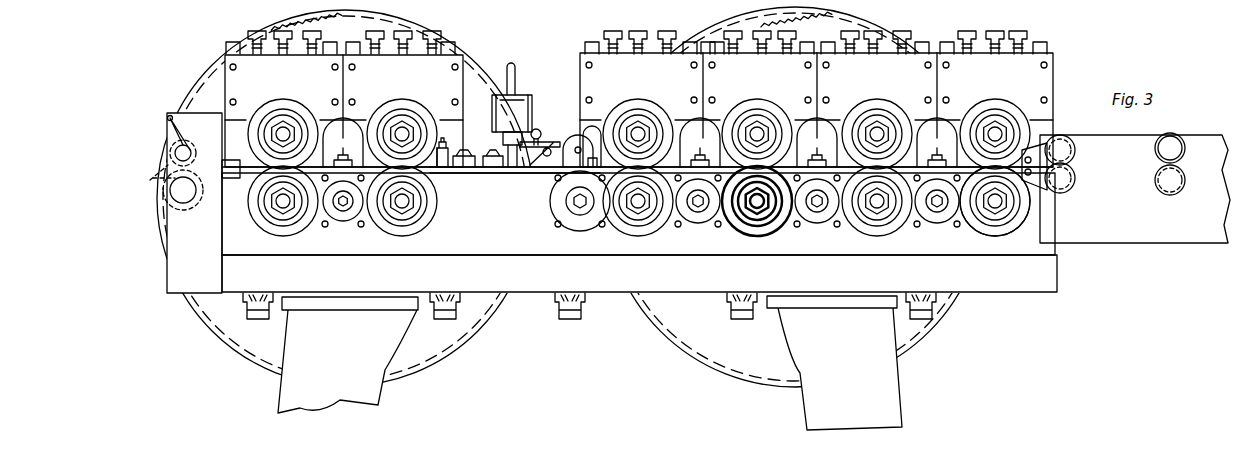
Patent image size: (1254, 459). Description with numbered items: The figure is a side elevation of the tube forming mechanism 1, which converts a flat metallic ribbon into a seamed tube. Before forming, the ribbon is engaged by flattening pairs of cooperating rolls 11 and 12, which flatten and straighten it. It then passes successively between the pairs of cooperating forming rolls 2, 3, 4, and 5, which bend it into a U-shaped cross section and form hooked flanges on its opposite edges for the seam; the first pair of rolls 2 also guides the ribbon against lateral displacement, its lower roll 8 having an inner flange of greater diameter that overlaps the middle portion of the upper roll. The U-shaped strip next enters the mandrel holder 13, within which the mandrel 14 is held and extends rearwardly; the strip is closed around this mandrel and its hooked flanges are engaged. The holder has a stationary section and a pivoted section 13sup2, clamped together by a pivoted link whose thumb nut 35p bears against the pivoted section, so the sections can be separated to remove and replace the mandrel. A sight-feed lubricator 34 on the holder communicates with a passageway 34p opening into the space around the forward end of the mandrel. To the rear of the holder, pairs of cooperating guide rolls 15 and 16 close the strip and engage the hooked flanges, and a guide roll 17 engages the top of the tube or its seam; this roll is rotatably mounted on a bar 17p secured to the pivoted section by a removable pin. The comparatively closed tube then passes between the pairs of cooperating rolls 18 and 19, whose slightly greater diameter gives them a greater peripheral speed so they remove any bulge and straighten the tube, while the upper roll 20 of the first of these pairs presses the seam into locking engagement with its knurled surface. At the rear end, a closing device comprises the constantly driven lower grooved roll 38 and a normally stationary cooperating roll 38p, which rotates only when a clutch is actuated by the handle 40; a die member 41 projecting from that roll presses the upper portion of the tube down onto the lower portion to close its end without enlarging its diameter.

The tube forming mechanism 1 is at (1085, 265).
The pair of cooperating forming rolls 2 is at (995, 238).
The pair of cooperating forming rolls 3 is at (877, 232).
The pair of cooperating forming rolls 4 is at (755, 232).
The pair of cooperating forming rolls 5 is at (638, 226).
The lower roll 8 is at (1000, 222).
The flattening pair of cooperating rolls 11 is at (1060, 135).
The flattening pair of cooperating rolls 12 is at (1182, 135).
The mandrel holder 13 is at (470, 174).
The pivoted section 13sup2 is at (587, 162).
The mandrel 14 is at (514, 168).
The pair of cooperating guide rolls 15 is at (493, 168).
The pair of cooperating guide rolls 16 is at (458, 168).
The guide roll 17 is at (448, 150).
The bar 17p is at (440, 176).
The pair of cooperating rolls 18 is at (402, 236).
The pair of cooperating rolls 19 is at (285, 236).
The upper roll 20 is at (406, 110).
The lubricator 34 is at (516, 114).
The passageway 34p is at (516, 160).
The thumb nut 35p is at (542, 143).
The lower grooved roll 38 is at (186, 210).
The rotatable roll 38p is at (188, 145).
The handle 40 is at (167, 117).
The die member 41 is at (152, 180).